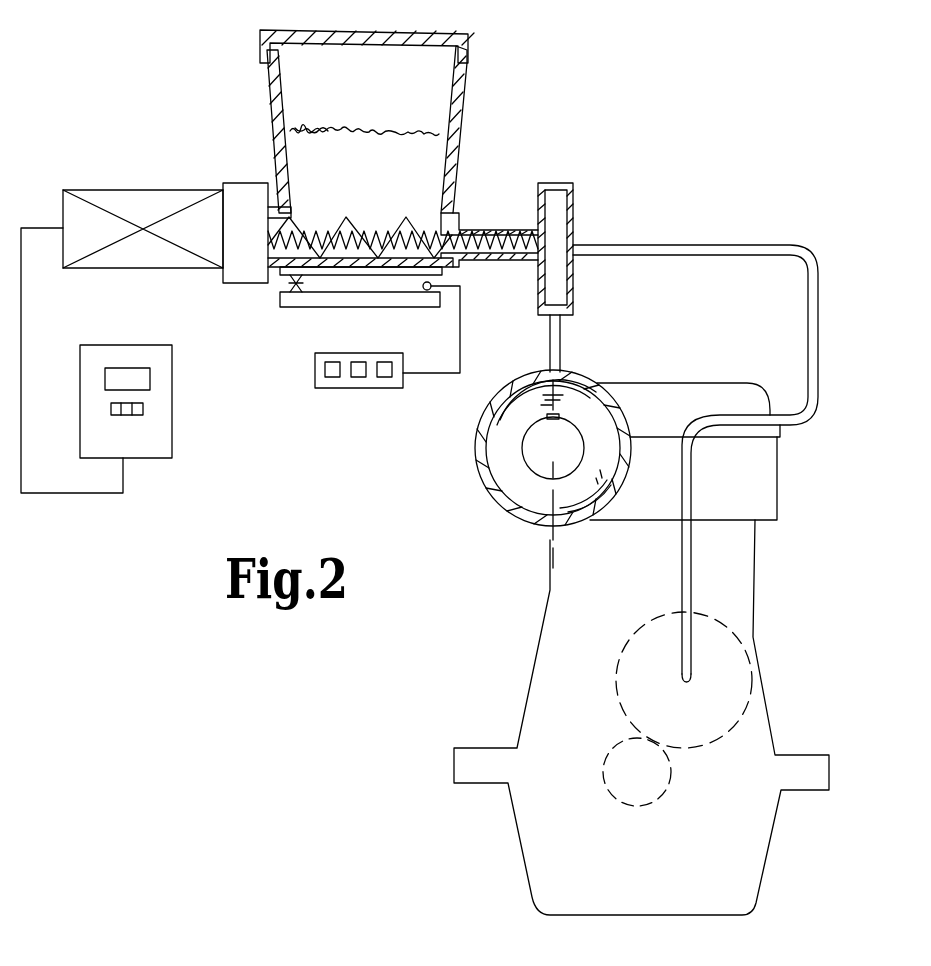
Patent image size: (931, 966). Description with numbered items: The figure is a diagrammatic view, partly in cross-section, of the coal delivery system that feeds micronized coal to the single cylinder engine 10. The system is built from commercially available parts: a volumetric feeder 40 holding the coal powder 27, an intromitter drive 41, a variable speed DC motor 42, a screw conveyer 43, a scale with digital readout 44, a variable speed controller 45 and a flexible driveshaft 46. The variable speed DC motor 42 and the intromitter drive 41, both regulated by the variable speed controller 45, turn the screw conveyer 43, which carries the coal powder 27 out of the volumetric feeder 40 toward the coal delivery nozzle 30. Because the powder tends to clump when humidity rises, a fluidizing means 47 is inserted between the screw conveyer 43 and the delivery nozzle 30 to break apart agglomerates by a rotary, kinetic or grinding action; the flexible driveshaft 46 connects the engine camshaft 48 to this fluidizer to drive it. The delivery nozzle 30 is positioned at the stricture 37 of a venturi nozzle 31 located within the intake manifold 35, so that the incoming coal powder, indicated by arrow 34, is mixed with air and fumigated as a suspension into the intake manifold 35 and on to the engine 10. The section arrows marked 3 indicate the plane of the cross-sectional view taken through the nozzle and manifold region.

The single cylinder engine 10 is at (776, 648).
The coal powder 27 is at (402, 130).
The coal delivery nozzle 30 is at (560, 340).
The venturi nozzle 31 is at (523, 488).
The intake manifold 35 is at (478, 462).
The stricture 37 is at (543, 437).
The volumetric feeder 40 is at (455, 142).
The intromitter drive 41 is at (253, 183).
The variable speed DC motor 42 is at (157, 190).
The screw conveyer 43 is at (405, 218).
The scale with digital readout 44 is at (357, 276).
The variable speed controller 45 is at (172, 417).
The flexible driveshaft 46 is at (818, 348).
The fluidizing means 47 is at (573, 283).
The engine camshaft 48 is at (750, 692).
The section line 3- 3 is at (556, 343).
The arrow indicating incoming coal powder 34 is at (241, 950).